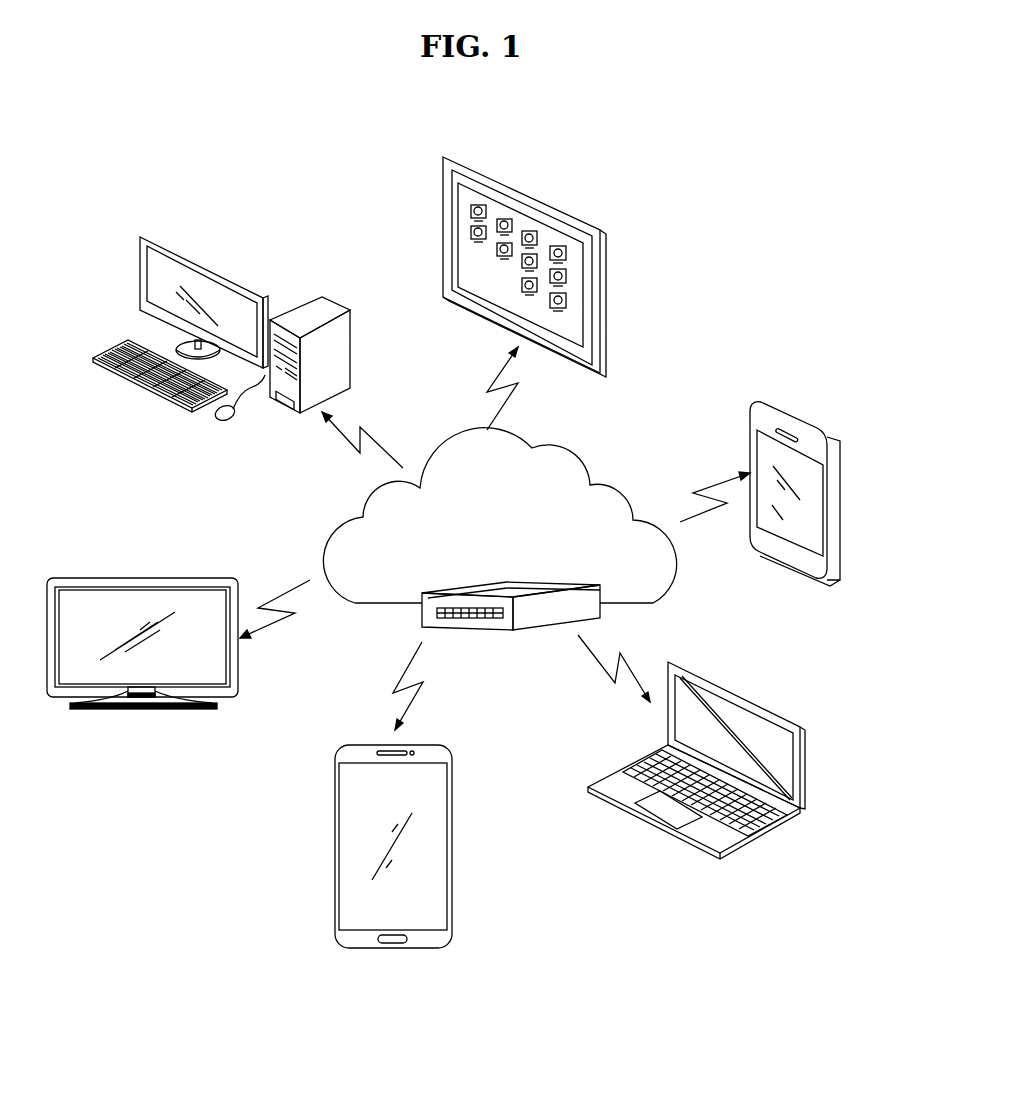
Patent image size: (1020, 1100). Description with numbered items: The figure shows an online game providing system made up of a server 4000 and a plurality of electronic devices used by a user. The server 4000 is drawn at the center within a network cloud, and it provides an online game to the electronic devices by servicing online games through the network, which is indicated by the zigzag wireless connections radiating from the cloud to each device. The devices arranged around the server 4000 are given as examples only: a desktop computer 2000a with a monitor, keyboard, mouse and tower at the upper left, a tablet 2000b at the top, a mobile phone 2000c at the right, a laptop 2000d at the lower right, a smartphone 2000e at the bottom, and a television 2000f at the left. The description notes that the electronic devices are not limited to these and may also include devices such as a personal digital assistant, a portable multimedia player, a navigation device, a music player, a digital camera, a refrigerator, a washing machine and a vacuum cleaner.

The desktop computer 2000a is at (203, 267).
The tablet 2000b is at (530, 193).
The mobile phone 2000c is at (797, 412).
The laptop 2000d is at (738, 690).
The smartphone 2000e is at (430, 743).
The television 2000f is at (145, 577).
The server 4000 is at (527, 545).